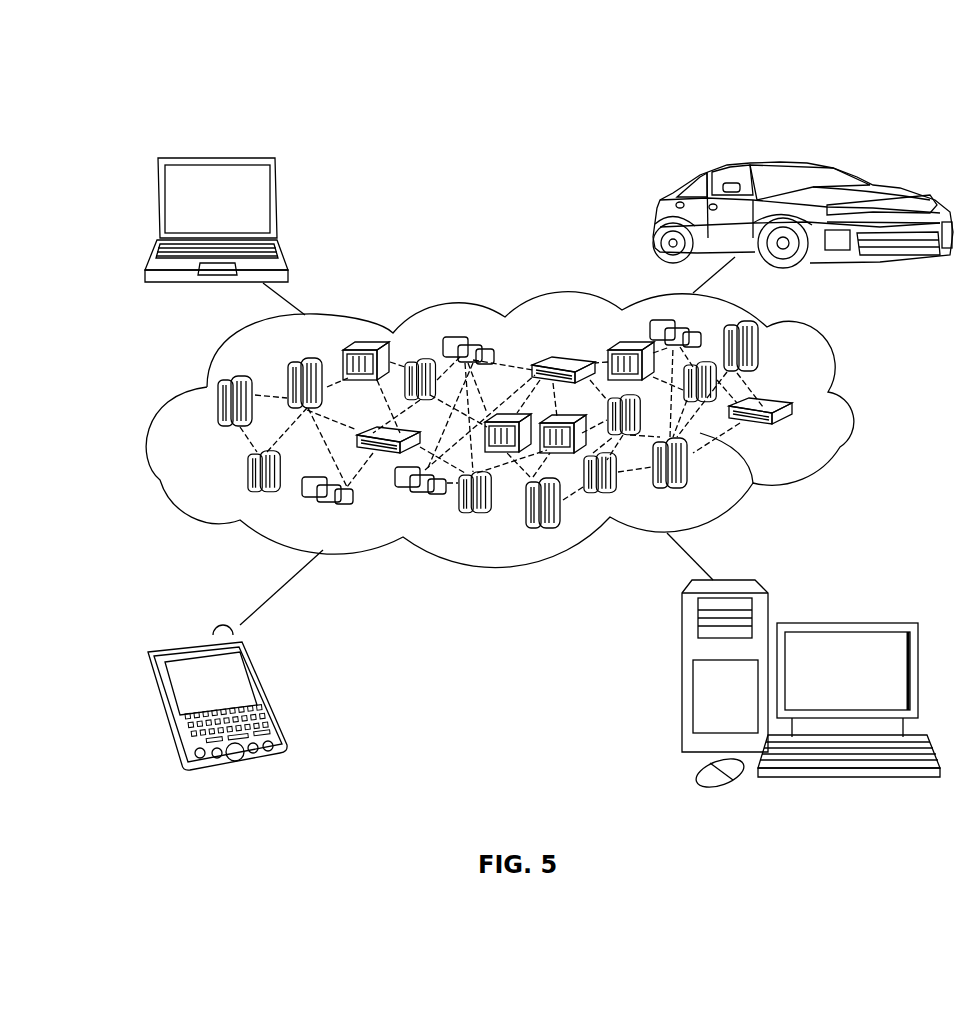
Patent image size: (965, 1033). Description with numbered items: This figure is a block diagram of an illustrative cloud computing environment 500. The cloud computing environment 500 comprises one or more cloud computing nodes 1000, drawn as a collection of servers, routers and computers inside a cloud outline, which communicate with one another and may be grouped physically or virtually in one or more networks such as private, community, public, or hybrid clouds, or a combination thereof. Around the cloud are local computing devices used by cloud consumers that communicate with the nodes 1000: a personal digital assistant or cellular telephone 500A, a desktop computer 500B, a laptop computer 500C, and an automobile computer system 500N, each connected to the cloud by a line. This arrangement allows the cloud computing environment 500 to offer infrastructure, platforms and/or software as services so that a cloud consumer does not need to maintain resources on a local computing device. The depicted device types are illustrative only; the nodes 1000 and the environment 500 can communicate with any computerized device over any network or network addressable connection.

The cloud computing environment 500 is at (107, 64).
The personal digital assistant or cellular telephone 500A is at (270, 692).
The desktop computer 500B is at (845, 623).
The laptop computer 500C is at (280, 205).
The automobile computer system 500N is at (653, 218).
The cloud computing nodes 1000 is at (805, 434).